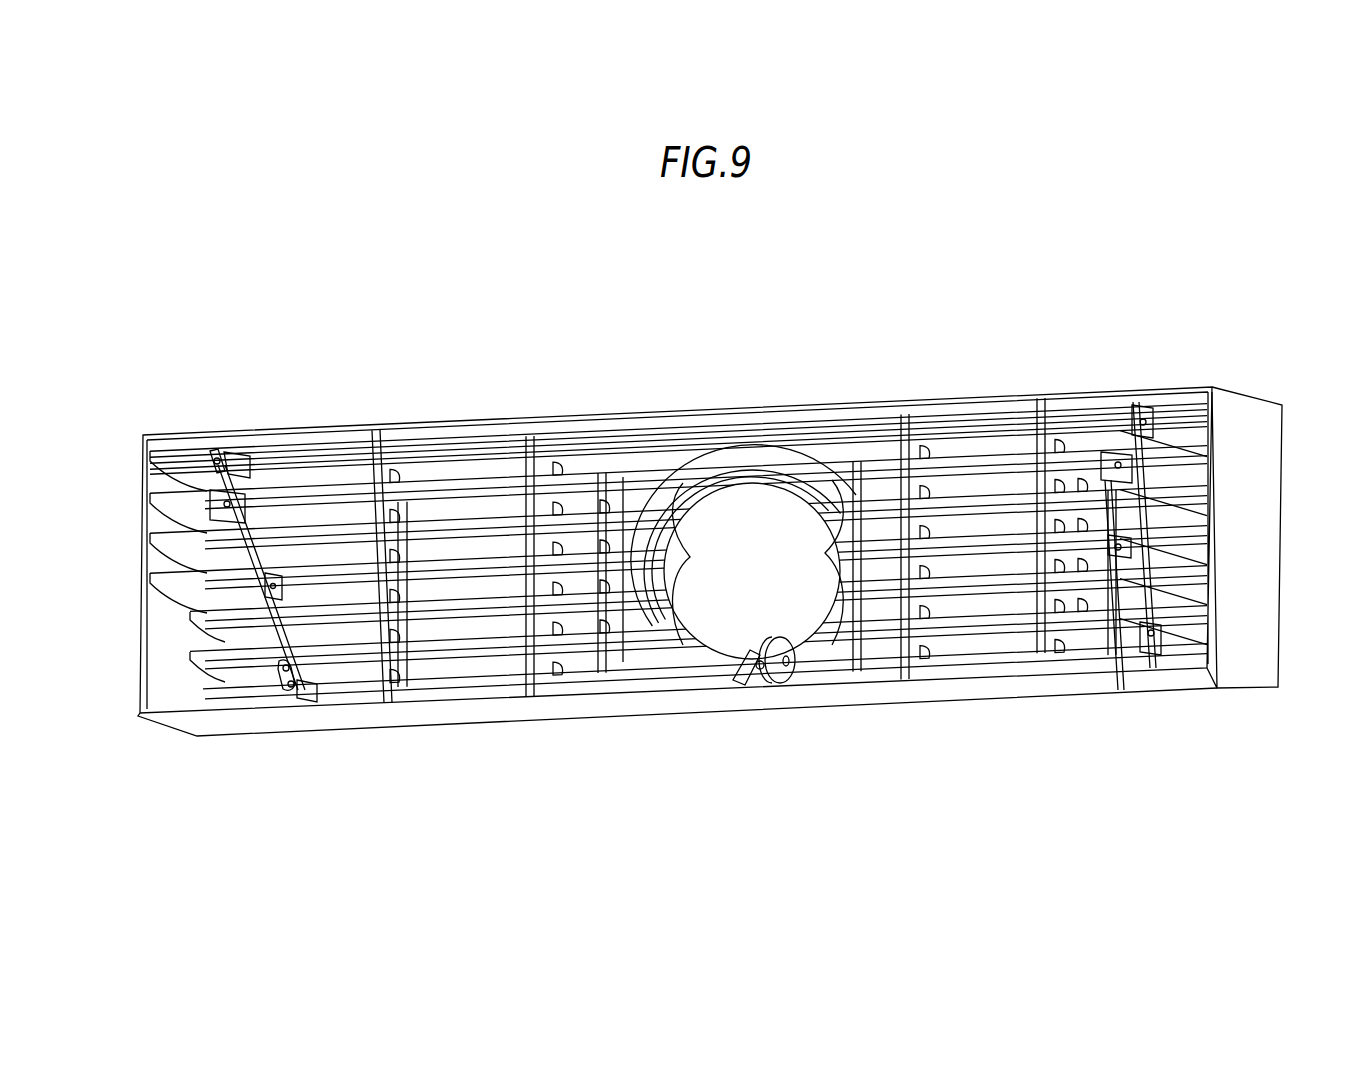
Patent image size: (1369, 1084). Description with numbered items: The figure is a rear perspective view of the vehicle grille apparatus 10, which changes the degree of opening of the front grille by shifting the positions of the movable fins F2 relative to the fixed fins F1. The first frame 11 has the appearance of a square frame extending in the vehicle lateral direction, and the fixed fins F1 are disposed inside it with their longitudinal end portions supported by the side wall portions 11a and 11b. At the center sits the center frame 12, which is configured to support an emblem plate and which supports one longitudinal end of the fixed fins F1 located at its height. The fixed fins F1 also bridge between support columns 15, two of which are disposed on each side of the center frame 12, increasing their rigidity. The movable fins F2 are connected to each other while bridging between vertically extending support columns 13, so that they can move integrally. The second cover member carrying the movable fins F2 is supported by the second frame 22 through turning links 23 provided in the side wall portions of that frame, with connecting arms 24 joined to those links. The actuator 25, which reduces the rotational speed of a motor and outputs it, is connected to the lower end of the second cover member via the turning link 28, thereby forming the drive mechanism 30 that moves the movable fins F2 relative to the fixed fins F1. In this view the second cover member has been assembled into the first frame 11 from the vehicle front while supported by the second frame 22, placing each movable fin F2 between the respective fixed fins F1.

The vehicle grille apparatus 10 is at (1217, 299).
The first frame 11 is at (1262, 399).
The side wall portion 11a is at (1240, 660).
The side wall portion 11b is at (170, 660).
The center frame 12 is at (730, 466).
The support column 13 is at (383, 705).
The support column 15 is at (383, 452).
The second frame 22 is at (205, 628).
The turning link 23 is at (212, 452).
The connecting arm 24 is at (248, 460).
The actuator 25 is at (790, 683).
The turning link 28 is at (750, 684).
The drive mechanism 30 is at (1048, 820).
The fixed fin F1 is at (1298, 513).
The movable fin F2 is at (993, 719).